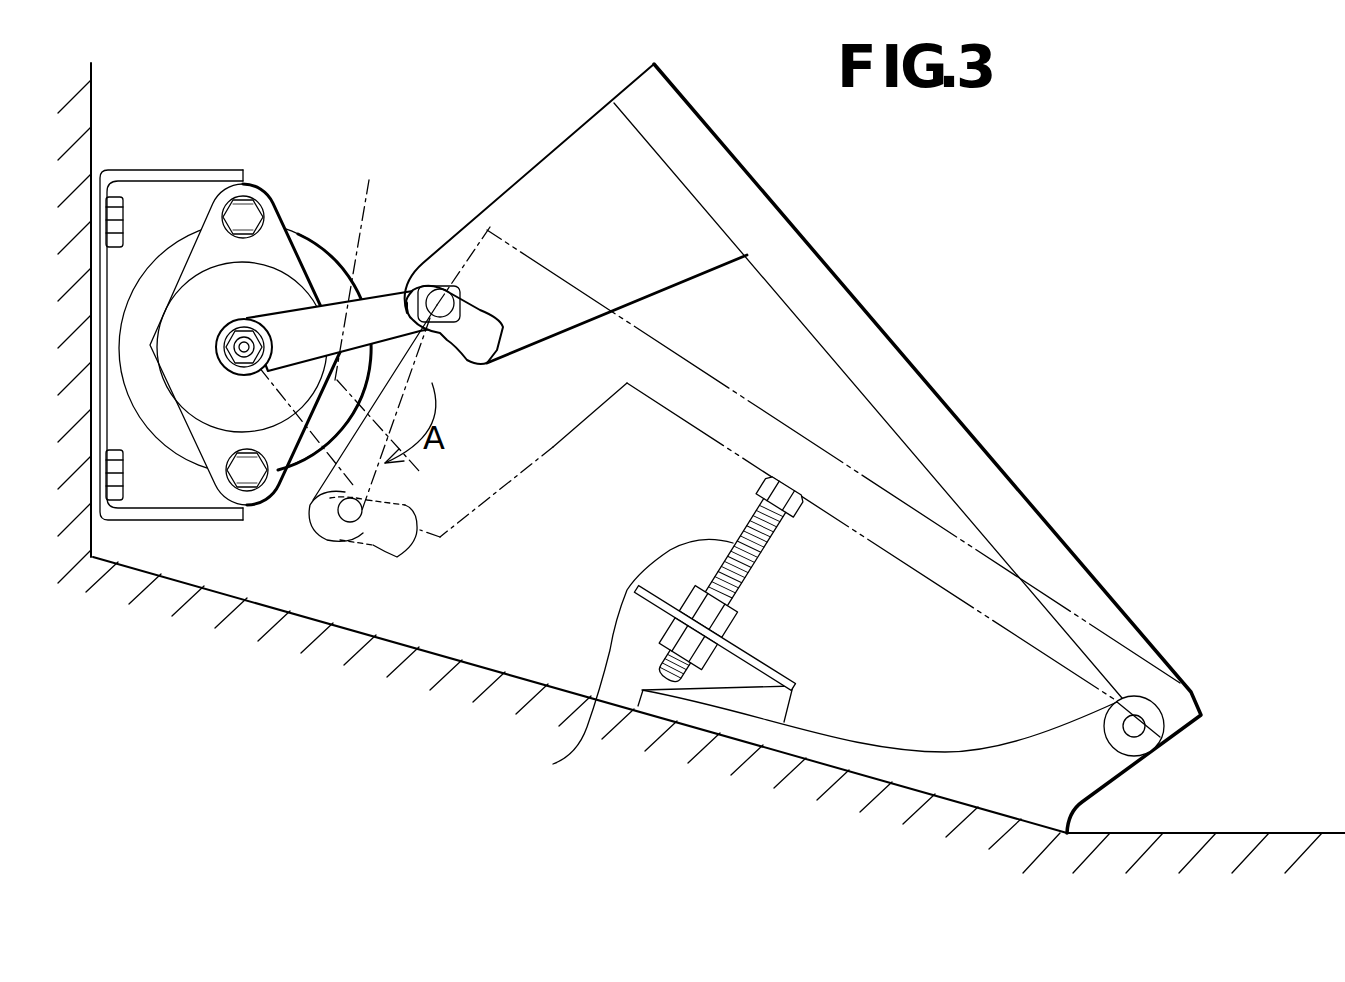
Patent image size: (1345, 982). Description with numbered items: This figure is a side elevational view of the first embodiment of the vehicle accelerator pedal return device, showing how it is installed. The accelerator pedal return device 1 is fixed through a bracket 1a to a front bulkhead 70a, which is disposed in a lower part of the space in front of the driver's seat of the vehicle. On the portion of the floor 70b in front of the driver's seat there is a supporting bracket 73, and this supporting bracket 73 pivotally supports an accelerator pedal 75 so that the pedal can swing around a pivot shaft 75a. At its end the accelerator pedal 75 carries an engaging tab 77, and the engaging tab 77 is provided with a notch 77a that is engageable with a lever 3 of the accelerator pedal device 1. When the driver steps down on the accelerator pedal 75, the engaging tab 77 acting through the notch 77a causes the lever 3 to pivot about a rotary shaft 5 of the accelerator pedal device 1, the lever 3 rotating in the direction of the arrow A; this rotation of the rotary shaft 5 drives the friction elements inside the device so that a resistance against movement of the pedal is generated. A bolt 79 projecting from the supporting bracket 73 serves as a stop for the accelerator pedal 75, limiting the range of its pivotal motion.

The accelerator pedal return device 1 is at (333, 300).
The bracket 1a is at (187, 170).
The lever 3 is at (377, 298).
The rotary shaft 5 is at (243, 350).
The front bulkhead 70a is at (80, 127).
The floor 70b is at (413, 668).
The supporting bracket 73 is at (737, 735).
The accelerator pedal 75 is at (793, 425).
The pivot shaft 75a is at (1134, 726).
The engaging tab 77 is at (557, 200).
The notch 77a is at (440, 300).
The bolt 79 is at (556, 760).